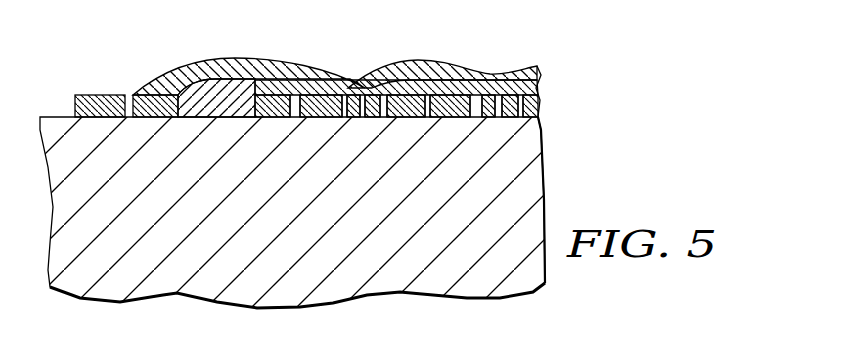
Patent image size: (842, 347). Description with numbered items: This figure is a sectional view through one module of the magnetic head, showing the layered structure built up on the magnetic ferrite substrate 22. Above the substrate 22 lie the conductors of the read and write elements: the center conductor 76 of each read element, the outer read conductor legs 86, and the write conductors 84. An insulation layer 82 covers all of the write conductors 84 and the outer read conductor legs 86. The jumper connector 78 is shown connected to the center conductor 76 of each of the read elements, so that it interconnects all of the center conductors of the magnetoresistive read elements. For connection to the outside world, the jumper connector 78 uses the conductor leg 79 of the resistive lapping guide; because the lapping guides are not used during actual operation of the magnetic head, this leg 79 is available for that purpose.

The magnetic ferrite substrate 22 is at (524, 197).
The center conductor 76 is at (362, 118).
The jumper connector 78 is at (447, 96).
The conductor leg 79 is at (158, 118).
The insulation layer 82 is at (237, 120).
The write conductors 84 is at (277, 100).
The outer read conductor legs 86 is at (490, 96).